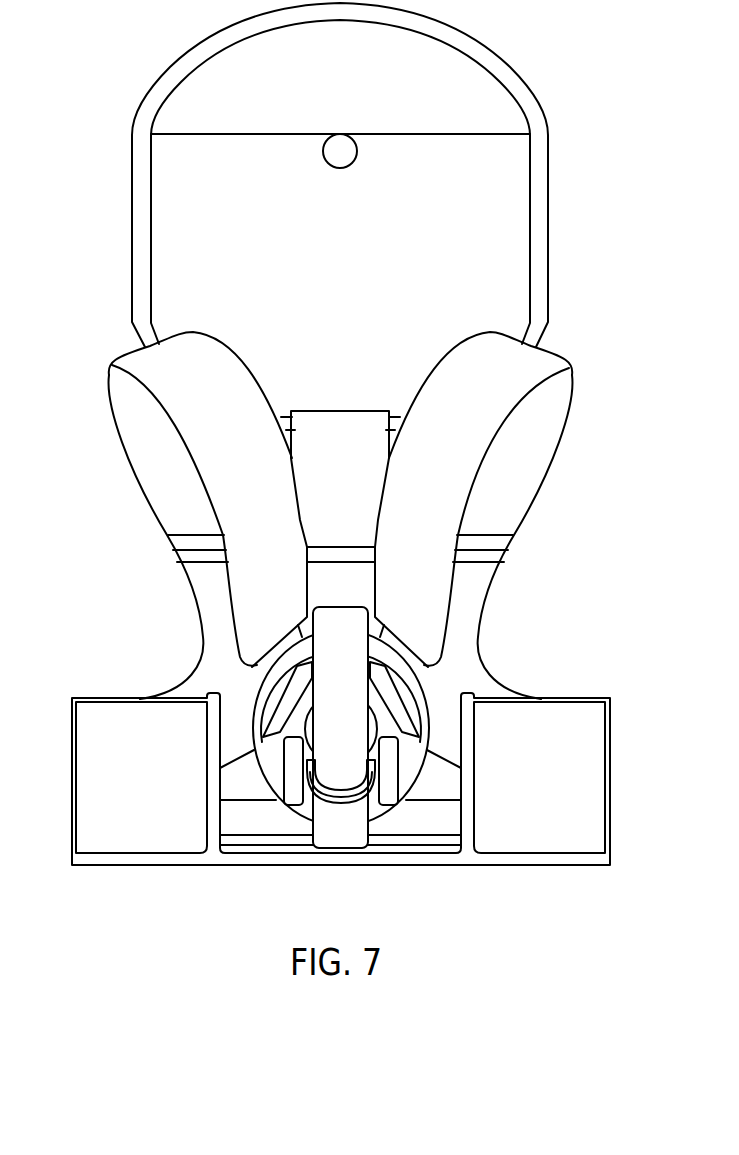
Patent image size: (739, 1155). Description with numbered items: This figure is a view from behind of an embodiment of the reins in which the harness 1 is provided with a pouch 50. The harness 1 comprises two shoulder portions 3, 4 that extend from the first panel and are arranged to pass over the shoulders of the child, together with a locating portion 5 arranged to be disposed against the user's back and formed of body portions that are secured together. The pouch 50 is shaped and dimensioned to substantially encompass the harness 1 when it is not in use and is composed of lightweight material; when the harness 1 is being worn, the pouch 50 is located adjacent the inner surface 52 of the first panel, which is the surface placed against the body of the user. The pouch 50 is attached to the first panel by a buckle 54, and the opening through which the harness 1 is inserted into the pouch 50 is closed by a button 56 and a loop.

The harness 1 is at (97, 508).
The shoulder portion 3 is at (193, 393).
The shoulder portion 4 is at (477, 407).
The locating portion 5 is at (265, 693).
The pouch 50 is at (478, 197).
The inner surface 52 is at (353, 577).
The buckle 54 is at (320, 418).
The button 56 is at (337, 154).